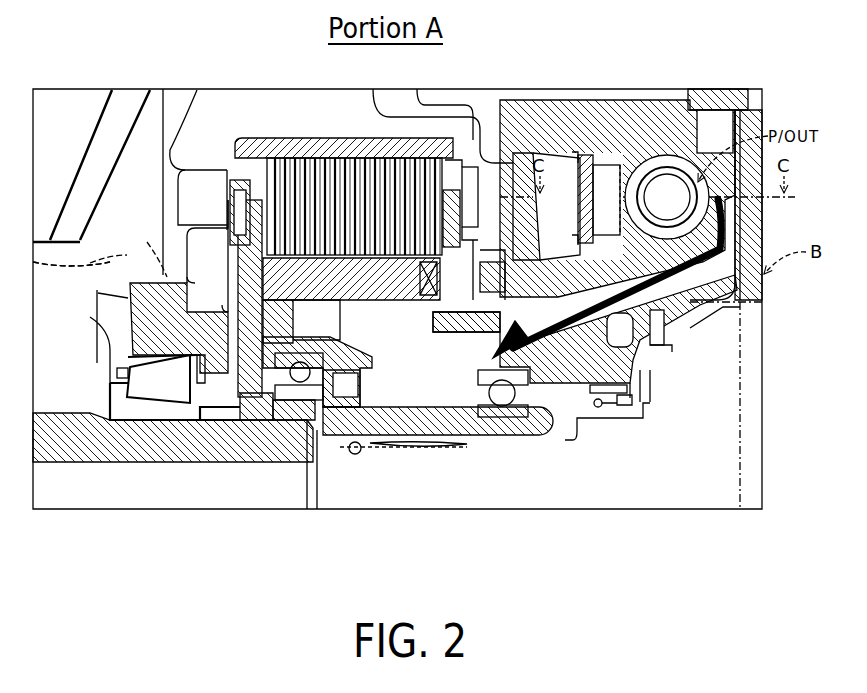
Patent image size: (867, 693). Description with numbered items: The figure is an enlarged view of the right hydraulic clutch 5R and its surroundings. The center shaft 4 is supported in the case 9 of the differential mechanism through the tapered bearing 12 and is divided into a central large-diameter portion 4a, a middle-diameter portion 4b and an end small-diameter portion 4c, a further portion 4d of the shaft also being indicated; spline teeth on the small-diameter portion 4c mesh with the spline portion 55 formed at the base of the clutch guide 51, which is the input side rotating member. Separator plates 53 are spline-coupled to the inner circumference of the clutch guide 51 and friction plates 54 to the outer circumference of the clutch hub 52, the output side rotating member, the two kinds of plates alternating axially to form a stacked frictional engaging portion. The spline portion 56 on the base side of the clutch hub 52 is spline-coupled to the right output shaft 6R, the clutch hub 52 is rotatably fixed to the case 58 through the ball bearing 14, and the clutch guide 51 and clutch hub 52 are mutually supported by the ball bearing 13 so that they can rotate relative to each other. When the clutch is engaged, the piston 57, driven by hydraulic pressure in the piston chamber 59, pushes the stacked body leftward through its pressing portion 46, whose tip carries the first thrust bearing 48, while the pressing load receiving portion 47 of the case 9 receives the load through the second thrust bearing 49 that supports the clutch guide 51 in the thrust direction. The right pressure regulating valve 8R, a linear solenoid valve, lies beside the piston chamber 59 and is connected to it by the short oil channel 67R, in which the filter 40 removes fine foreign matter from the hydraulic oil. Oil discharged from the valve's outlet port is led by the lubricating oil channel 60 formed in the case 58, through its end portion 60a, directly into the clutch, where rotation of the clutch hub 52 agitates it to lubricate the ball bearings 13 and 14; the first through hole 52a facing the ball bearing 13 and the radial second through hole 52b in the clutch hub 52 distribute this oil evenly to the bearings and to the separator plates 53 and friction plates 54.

The center shaft 4 is at (183, 494).
The large-diameter portion 4a is at (85, 445).
The middle-diameter portion 4b is at (182, 447).
The small-diameter portion 4c is at (265, 447).
The crankcase surface 4d is at (130, 507).
The right hydraulic clutch 5R is at (333, 199).
The right output shaft 6R is at (522, 480).
The right pressure regulating valve 8R is at (717, 87).
The case 9 is at (160, 280).
The tapered bearing 12 is at (127, 343).
The ball bearing 13 is at (247, 335).
The ball bearing 14 is at (482, 408).
The filter 40 is at (560, 163).
The pressing portion 46 is at (472, 150).
The pressing load receiving portion 47 is at (225, 165).
The first thrust bearing 48 is at (455, 207).
The second thrust bearing 49 is at (237, 205).
The clutch guide 51 is at (318, 128).
The clutch hub 52 is at (348, 362).
The first through hole 52a is at (362, 378).
The second through hole 52b is at (187, 262).
The separator plate 53 is at (268, 150).
The friction plate 54 is at (263, 290).
The spline portion 55 is at (275, 425).
The spline portion 56 is at (400, 452).
The piston 57 is at (518, 157).
The case 58 is at (627, 170).
The piston chamber 59 is at (585, 153).
The lubricating oil channel 60 is at (690, 323).
The housing flange 60a is at (484, 339).
The oil channel 67R is at (677, 147).